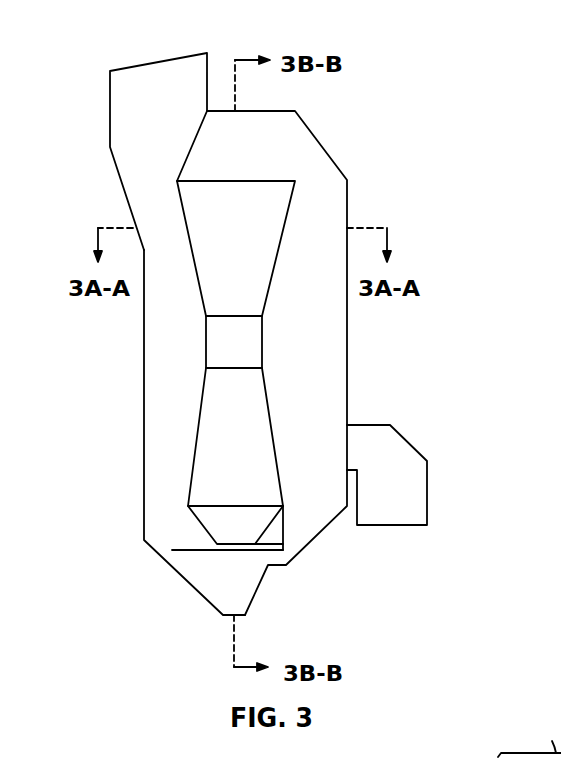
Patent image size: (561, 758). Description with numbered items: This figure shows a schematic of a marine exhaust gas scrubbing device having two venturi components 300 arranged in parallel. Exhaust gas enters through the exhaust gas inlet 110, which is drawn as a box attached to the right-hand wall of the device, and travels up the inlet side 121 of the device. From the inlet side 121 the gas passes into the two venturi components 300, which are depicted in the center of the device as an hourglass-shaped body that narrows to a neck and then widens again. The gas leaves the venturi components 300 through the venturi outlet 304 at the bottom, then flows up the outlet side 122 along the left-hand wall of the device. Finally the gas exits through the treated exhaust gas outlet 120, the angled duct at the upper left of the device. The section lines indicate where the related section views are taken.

The outlet duct 110 is at (390, 526).
The inlet duct 120 is at (158, 62).
The right side wall 121 is at (337, 410).
The left side wall 122 is at (168, 373).
The hourglass-shaped insert 300 is at (183, 215).
The inner funnel 304 is at (215, 526).